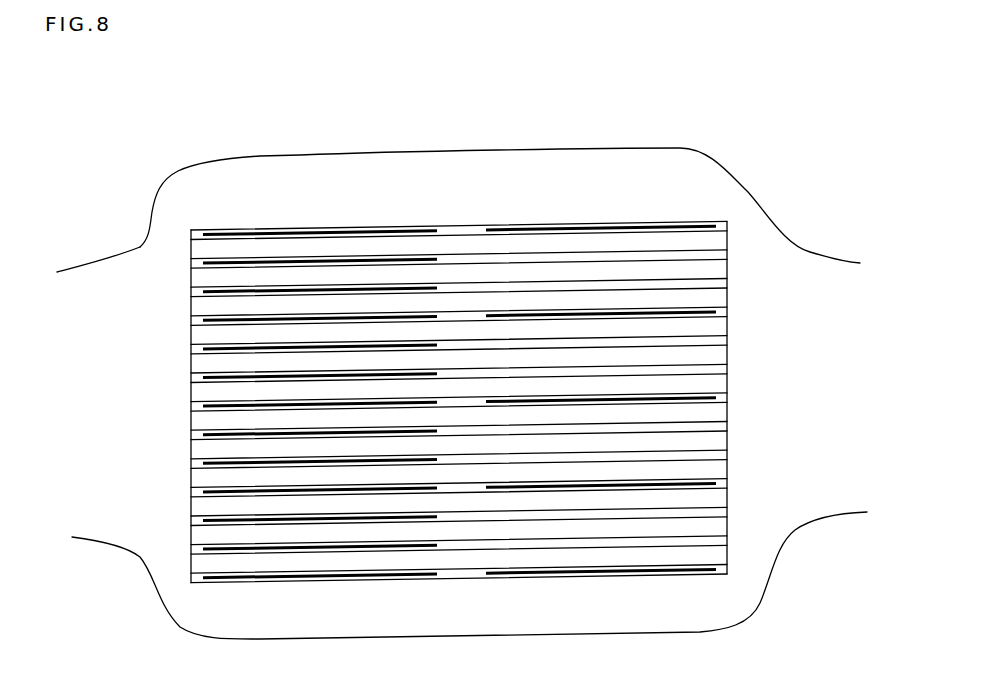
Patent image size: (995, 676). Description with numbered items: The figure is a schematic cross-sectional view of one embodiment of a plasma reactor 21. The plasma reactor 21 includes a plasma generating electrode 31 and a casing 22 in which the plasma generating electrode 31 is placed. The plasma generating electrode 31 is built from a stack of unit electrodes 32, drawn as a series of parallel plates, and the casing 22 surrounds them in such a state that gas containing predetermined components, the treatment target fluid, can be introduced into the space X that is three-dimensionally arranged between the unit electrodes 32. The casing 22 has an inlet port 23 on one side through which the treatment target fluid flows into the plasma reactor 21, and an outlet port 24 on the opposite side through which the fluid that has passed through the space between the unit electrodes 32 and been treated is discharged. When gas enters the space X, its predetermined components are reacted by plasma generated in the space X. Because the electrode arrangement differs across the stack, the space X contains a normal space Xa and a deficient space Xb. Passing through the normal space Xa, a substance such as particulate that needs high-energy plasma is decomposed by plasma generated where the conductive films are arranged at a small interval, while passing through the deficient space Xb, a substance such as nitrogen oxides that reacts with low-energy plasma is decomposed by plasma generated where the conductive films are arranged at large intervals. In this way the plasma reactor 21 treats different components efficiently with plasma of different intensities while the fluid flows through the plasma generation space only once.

The plasma reactor 21 is at (738, 98).
The casing 22 is at (312, 153).
The inlet port 23 is at (92, 263).
The outlet port 24 is at (843, 517).
The plasma generating electrode 31 is at (697, 217).
The unit electrodes 32 is at (440, 255).
The space X is at (553, 245).
The normal space Xa is at (222, 282).
The deficient space Xb is at (507, 305).